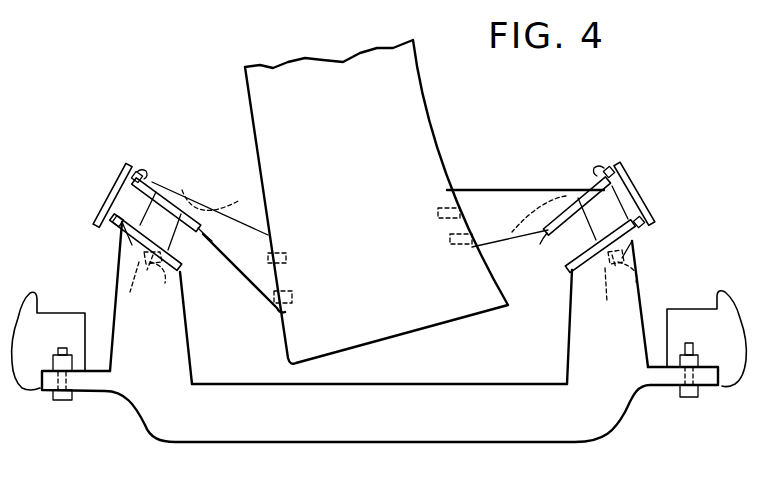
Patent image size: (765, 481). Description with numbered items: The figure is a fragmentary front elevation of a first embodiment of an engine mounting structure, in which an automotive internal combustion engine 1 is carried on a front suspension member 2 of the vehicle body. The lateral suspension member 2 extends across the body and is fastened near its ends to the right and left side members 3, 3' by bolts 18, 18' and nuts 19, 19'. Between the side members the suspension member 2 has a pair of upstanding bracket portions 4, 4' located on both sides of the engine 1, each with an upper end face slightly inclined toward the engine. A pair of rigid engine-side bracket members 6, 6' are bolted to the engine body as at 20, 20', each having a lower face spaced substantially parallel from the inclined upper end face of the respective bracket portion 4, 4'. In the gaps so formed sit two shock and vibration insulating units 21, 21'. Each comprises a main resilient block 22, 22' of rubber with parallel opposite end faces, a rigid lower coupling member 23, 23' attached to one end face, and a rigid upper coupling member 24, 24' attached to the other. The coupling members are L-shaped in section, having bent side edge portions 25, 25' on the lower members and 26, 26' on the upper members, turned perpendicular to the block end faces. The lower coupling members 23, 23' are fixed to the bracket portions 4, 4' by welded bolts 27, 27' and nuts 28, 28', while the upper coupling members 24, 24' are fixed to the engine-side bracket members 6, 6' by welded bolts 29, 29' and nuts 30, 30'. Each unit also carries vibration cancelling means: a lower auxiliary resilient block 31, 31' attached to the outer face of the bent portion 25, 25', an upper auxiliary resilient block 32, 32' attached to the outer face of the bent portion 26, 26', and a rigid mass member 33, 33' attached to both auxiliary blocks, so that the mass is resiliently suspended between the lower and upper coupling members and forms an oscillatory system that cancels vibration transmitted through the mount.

The internal combustion engine 1 is at (431, 87).
The front suspension member 2 is at (389, 420).
The side member 3 is at (48, 341).
The side member 3' is at (706, 339).
The upstanding bracket portion 4 is at (162, 303).
The upstanding bracket portion 4' is at (589, 312).
The engine-side bracket member 6 is at (244, 273).
The engine-side bracket member 6' is at (525, 175).
The bolt 18 is at (67, 407).
The bolt 18' is at (684, 402).
The nut 19 is at (81, 346).
The nut 19' is at (686, 340).
The bolt 20 is at (277, 284).
The bolt 20' is at (465, 200).
The shock and vibration insulating unit 21 is at (105, 182).
The shock and vibration insulating unit 21' is at (650, 193).
The main resilient block 22 is at (160, 248).
The main resilient block 22' is at (586, 254).
The lower coupling member 23 is at (109, 256).
The lower coupling member 23' is at (604, 273).
The upper coupling member 24 is at (225, 243).
The upper coupling member 24' is at (537, 251).
The bent side edge portion 25 is at (153, 221).
The bent side edge portion 25' is at (603, 213).
The bent side edge portion 26 is at (170, 193).
The bent side edge portion 26' is at (576, 198).
The bolt 27 is at (135, 285).
The bolt 27' is at (609, 293).
The nut 28 is at (159, 279).
The nut 28' is at (643, 270).
The bolt 29 is at (211, 189).
The bolt 29' is at (539, 213).
The nut 30 is at (210, 208).
The nut 30' is at (510, 251).
The lower auxiliary resilient block 31 is at (92, 220).
The lower auxiliary resilient block 31' is at (669, 221).
The upper auxiliary resilient block 32 is at (157, 159).
The upper auxiliary resilient block 32' is at (586, 152).
The rigid mass member 33 is at (125, 156).
The rigid mass member 33' is at (633, 155).